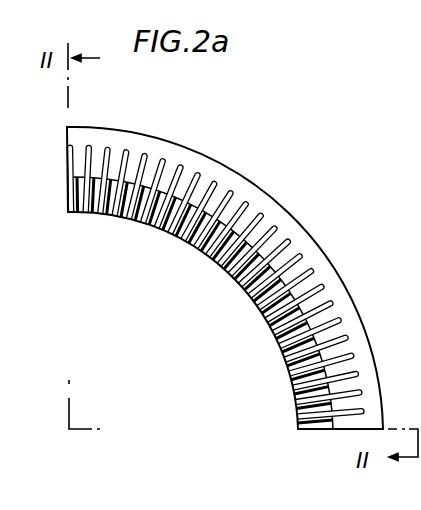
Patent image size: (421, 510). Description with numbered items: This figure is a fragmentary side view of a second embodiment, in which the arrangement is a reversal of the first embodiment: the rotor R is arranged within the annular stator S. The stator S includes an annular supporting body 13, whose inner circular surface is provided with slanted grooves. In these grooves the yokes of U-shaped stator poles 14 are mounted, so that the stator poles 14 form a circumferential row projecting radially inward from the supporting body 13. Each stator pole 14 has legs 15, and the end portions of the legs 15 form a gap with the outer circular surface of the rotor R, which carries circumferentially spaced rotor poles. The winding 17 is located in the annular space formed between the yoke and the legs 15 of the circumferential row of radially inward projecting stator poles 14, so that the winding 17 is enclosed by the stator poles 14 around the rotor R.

The annular supporting body 13 is at (257, 188).
The U-shaped stator pole 14 is at (325, 288).
The leg 15 is at (272, 322).
The winding 17 is at (190, 245).
The stator S is at (321, 258).
The rotor R is at (292, 382).